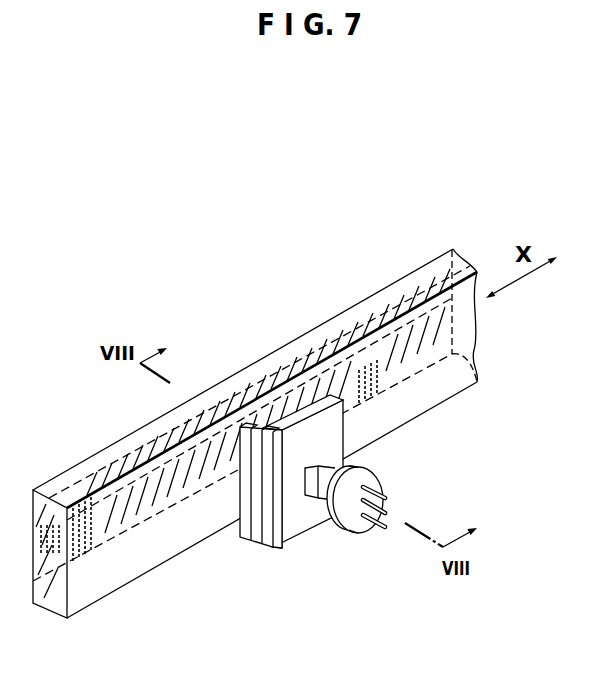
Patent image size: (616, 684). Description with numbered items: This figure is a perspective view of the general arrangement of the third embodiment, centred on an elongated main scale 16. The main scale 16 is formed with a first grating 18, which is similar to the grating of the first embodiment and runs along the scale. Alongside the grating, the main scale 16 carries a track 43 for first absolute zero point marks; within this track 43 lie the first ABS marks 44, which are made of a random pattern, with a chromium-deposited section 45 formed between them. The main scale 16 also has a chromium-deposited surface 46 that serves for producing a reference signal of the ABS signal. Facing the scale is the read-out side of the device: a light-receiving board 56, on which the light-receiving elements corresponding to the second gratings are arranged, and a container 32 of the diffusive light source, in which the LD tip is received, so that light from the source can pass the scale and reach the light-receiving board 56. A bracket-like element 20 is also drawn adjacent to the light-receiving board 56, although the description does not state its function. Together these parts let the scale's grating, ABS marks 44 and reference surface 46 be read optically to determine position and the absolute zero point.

The main scale 16 is at (303, 335).
The first grating 18 is at (36, 540).
The mounting bracket 20 is at (242, 540).
The container 32 is at (372, 478).
The track for first absolute zero point marks 43 is at (455, 342).
The first ABS marks 44 is at (83, 568).
The chromium-deposited section 45 is at (160, 512).
The chromium-deposited surface 46 is at (427, 282).
The light-receiving board 56 is at (330, 440).